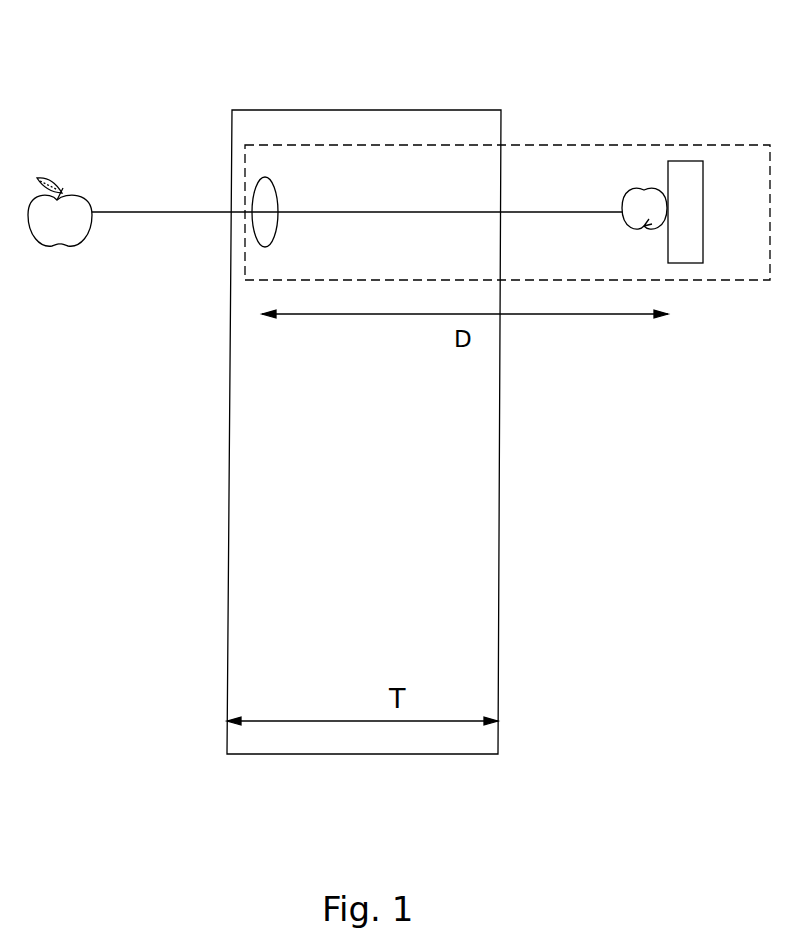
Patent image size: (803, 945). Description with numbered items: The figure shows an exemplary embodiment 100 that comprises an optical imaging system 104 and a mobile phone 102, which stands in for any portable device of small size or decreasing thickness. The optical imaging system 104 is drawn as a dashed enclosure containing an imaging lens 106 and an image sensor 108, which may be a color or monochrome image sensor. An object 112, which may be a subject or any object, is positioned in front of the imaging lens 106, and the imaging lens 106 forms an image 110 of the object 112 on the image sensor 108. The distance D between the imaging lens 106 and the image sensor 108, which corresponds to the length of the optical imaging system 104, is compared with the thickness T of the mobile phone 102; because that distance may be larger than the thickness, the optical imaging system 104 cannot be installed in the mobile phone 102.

The exemplary embodiment 100 is at (145, 74).
The mobile phone 102 is at (470, 110).
The optical imaging system 104 is at (563, 145).
The imaging lens 106 is at (278, 203).
The image sensor 108 is at (703, 213).
The image 110 is at (629, 222).
The object 112 is at (88, 193).